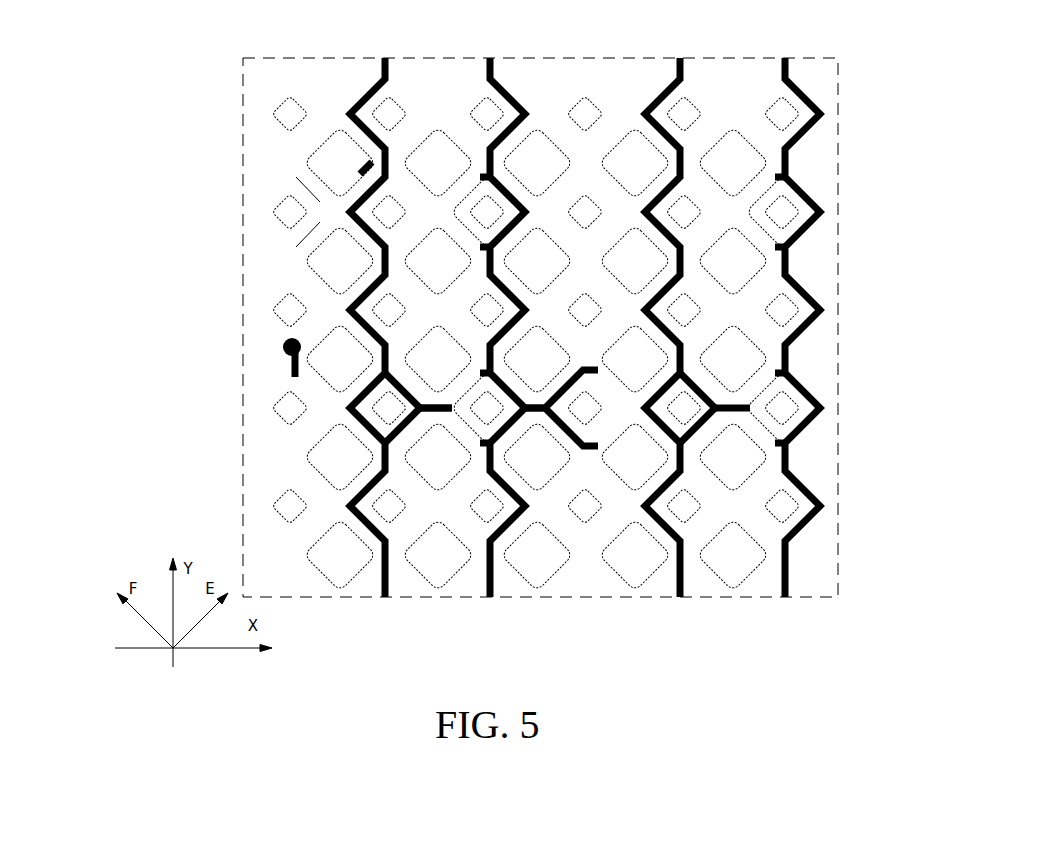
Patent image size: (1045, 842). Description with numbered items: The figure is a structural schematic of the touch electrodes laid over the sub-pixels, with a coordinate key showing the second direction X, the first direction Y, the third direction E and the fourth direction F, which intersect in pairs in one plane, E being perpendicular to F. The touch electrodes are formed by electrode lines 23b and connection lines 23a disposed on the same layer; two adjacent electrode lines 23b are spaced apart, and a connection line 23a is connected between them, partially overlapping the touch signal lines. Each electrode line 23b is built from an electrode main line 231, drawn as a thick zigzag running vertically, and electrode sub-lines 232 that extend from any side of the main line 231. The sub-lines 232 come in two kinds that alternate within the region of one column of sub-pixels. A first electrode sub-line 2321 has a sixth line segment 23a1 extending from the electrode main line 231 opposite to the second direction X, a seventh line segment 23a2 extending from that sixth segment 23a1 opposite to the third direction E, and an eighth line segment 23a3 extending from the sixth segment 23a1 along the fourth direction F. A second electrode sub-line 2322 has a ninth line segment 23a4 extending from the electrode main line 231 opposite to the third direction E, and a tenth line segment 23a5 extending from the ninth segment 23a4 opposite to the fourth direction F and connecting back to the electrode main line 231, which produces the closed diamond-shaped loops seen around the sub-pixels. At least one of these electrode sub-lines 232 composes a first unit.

The electrode main line 231 is at (368, 90).
The electrode sub-line 232 is at (458, 304).
The first electrode sub-line 2321 is at (238, 206).
The second electrode sub-line 2322 is at (353, 403).
The connection line 23a is at (724, 431).
The electrode line 23b is at (489, 307).
The sixth line segment 23a1 is at (324, 213).
The seventh line segment 23a2 is at (297, 233).
The eighth line segment 23a3 is at (302, 192).
The ninth line segment 23a4 is at (455, 385).
The tenth line segment 23a5 is at (455, 428).